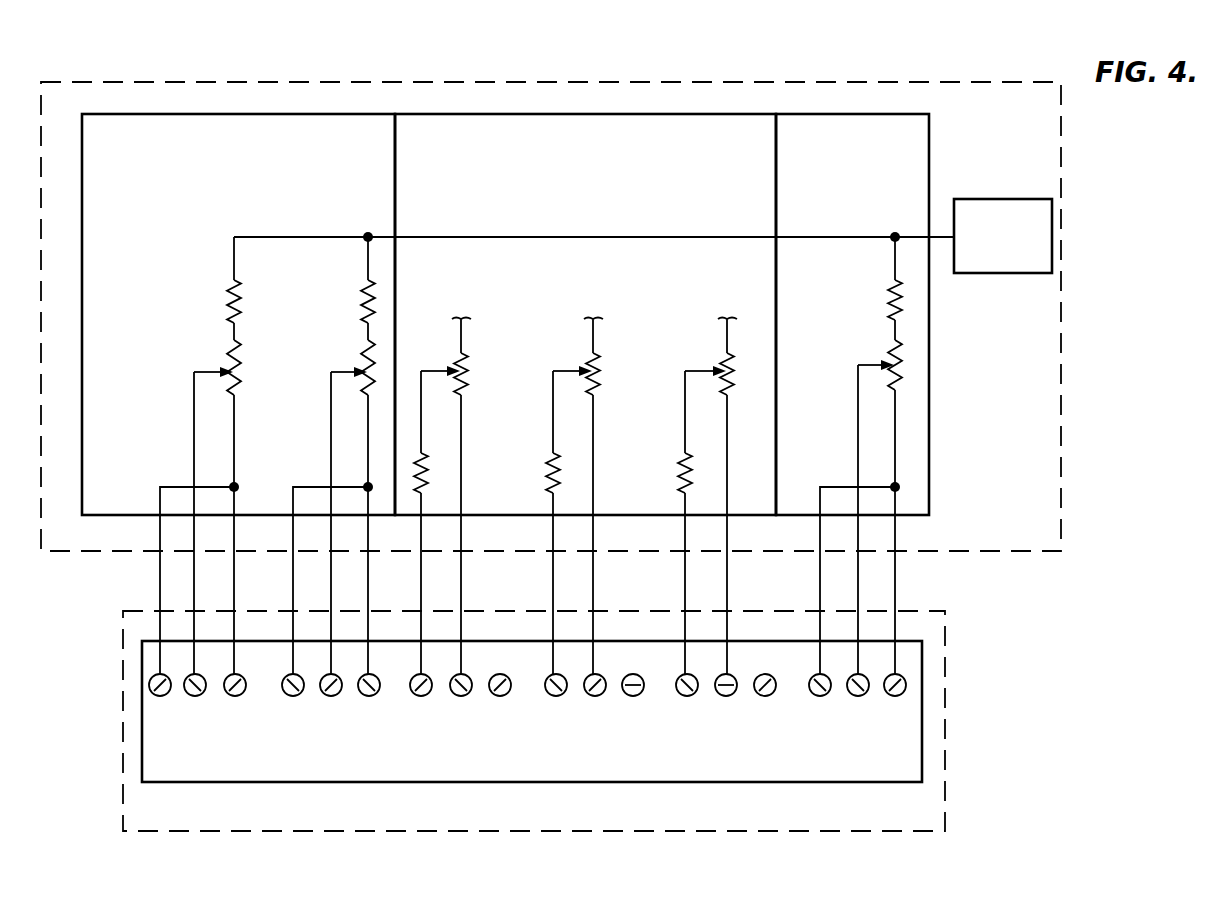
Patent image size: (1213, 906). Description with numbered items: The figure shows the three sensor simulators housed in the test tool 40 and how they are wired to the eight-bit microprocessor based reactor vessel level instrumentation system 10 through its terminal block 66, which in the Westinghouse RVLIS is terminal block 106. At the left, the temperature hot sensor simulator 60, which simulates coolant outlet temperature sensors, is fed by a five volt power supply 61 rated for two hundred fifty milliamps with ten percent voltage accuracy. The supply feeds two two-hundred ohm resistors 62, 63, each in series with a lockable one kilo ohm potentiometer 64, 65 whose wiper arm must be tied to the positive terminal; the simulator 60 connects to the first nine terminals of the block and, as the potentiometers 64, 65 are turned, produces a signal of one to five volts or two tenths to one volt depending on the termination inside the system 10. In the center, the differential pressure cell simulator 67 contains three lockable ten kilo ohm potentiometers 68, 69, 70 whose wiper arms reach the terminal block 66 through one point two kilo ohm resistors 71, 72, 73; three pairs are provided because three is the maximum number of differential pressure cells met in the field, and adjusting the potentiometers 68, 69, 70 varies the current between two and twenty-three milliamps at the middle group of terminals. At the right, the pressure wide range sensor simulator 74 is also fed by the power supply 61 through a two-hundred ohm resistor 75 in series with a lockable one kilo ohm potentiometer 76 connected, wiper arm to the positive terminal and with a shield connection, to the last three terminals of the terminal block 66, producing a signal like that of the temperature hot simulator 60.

The instrumentation system 10 is at (945, 741).
The test tool 40 is at (1047, 493).
The temperature hot sensor simulator 60 is at (82, 378).
The power supply 61 is at (1028, 264).
The 200 ohm resistor 62 is at (232, 283).
The 200 ohm resistor 63 is at (366, 283).
The 1 kilo ohm potentiometer 64 is at (235, 388).
The 1 kilo ohm potentiometer 65 is at (367, 388).
The terminal block 66 is at (532, 724).
The differential pressure cell simulator 67 is at (566, 120).
The 10 kilo ohm potentiometer 68 is at (463, 358).
The 10 kilo ohm potentiometer 69 is at (595, 358).
The 10 kilo ohm potentiometer 70 is at (729, 358).
The 1.2 kilo ohm resistor 71 is at (420, 456).
The 1.2 kilo ohm resistor 72 is at (552, 460).
The 1.2 kilo ohm resistor 73 is at (684, 460).
The pressure wide range sensor simulator 74 is at (906, 124).
The 200 ohm resistor 75 is at (892, 285).
The 1 kilo ohm lockable potentiometer 76 is at (896, 385).
The terminal block 106 is at (557, 756).